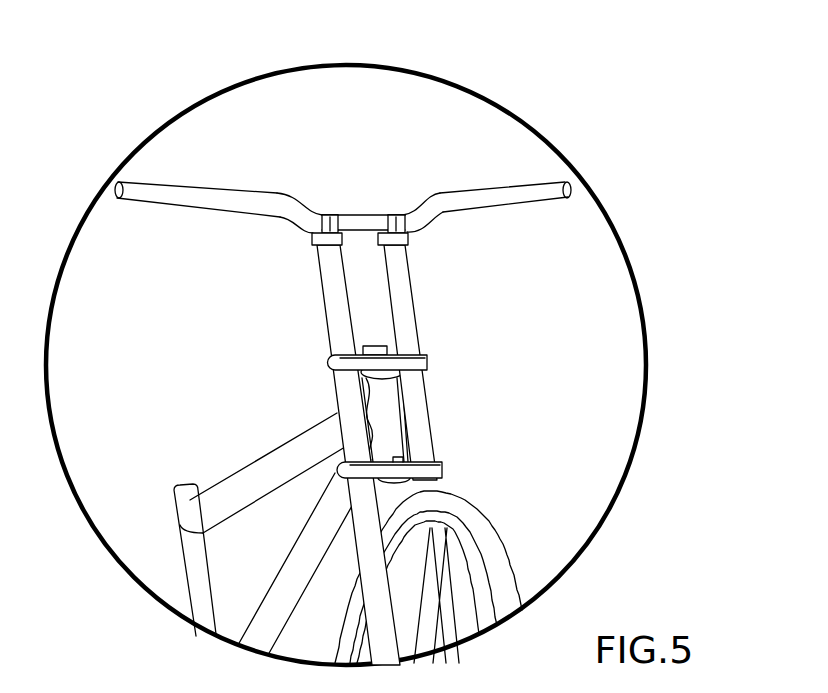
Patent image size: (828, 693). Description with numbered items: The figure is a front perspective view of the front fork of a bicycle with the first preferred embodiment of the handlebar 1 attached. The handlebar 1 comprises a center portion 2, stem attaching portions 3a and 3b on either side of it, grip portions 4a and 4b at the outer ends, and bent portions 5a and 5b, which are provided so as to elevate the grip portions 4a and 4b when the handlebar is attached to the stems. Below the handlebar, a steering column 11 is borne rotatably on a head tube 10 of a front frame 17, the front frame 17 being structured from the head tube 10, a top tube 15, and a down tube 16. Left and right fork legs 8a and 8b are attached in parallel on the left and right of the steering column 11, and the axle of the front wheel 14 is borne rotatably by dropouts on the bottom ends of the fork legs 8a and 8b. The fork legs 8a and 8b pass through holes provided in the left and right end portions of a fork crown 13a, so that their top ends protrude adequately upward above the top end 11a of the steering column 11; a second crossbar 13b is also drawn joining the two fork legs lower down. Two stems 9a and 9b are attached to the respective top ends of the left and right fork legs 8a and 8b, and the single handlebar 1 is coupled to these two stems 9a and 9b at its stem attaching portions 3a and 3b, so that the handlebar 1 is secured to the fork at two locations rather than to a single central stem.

The handlebar 1 is at (357, 199).
The center portion 2 is at (368, 215).
The stem attaching portion 3a is at (395, 213).
The stem attaching portion 3b is at (313, 213).
The grip portion 4a is at (503, 201).
The grip portion 4b is at (197, 202).
The bent portion 5a is at (420, 209).
The bent portion 5b is at (293, 209).
The fork leg 8a is at (405, 302).
The fork leg 8b is at (330, 303).
The stem 9a is at (408, 240).
The stem 9b is at (312, 240).
The head tube 10 is at (333, 417).
The steering column 11 is at (405, 375).
The top end of steering column 11a is at (376, 346).
The fork crown 13a is at (427, 358).
The lower crossbar 13b is at (440, 466).
The front wheel 14 is at (470, 504).
The top tube 15 is at (305, 439).
The down tube 16 is at (337, 498).
The front frame 17 is at (273, 516).